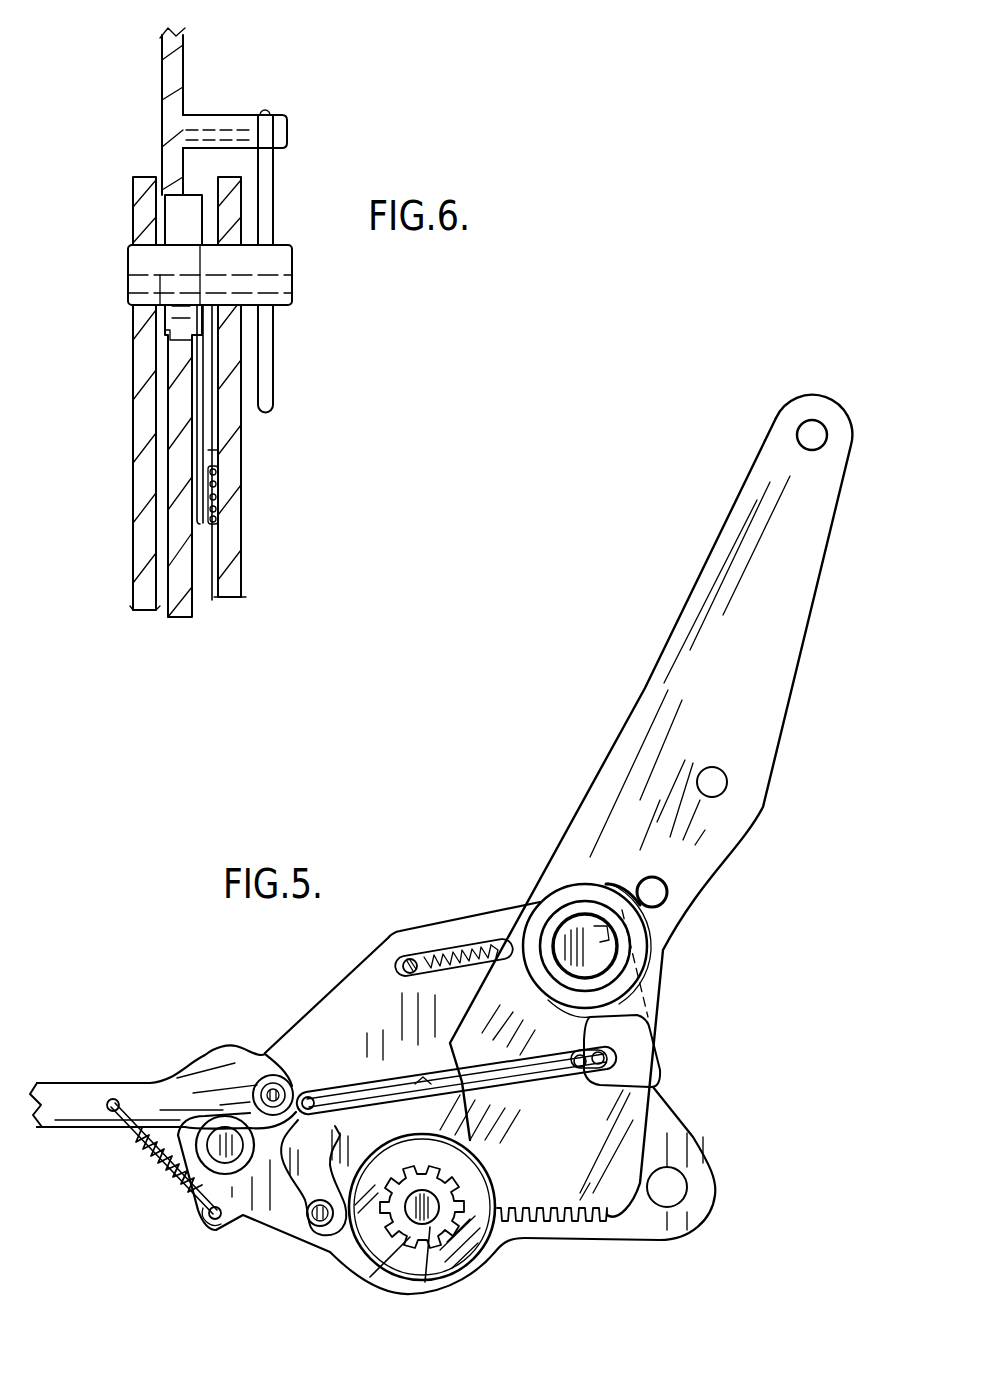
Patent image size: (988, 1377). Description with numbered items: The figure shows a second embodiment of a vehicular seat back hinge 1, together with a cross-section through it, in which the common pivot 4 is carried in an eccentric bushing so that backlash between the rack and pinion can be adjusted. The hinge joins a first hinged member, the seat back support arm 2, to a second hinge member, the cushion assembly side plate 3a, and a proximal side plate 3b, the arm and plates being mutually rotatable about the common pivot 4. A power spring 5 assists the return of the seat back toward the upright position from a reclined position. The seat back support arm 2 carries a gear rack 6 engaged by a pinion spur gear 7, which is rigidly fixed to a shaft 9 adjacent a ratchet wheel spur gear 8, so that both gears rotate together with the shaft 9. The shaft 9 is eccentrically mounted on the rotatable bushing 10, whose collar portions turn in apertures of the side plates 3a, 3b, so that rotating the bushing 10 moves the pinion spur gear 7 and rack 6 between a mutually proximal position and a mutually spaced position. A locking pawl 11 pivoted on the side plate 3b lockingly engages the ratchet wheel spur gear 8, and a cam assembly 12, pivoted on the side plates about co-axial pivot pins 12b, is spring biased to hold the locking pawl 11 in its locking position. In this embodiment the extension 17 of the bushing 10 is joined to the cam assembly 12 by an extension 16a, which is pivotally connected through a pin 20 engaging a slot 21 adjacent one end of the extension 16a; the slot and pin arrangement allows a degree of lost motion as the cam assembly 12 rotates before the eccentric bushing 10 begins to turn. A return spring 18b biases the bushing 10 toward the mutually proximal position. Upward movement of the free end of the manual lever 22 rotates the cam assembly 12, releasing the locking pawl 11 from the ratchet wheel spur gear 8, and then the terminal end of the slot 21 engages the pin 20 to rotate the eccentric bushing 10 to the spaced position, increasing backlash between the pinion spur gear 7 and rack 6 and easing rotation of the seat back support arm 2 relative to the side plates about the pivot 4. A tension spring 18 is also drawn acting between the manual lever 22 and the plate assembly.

In FIG. 5, the vehicular seat back hinge 1 is at (419, 849).
In FIG. 5, the seat back support arm 2 is at (743, 663).
In FIG. 6, the cushion assembly side plate 3a is at (133, 455).
In FIG. 5, the cushion assembly side plate 3a is at (397, 1024).
In FIG. 6, the proximal side plate 3b is at (243, 443).
In FIG. 5, the proximal side plate 3b is at (446, 1190).
In FIG. 6, the common pivot 4 is at (293, 277).
In FIG. 5, the common pivot 4 is at (593, 955).
In FIG. 6, the power spring 5 is at (273, 192).
In FIG. 5, the power spring 5 is at (578, 893).
In FIG. 5, the gear rack 6 is at (526, 1207).
In FIG. 5, the pinion spur gear 7 is at (430, 1227).
In FIG. 5, the ratchet wheel spur gear 8 is at (455, 1288).
In FIG. 5, the shaft 9 is at (410, 1237).
In FIG. 6, the eccentric bushing 10 is at (195, 322).
In FIG. 5, the eccentric bushing 10 is at (592, 1017).
In FIG. 5, the locking pawl 11 is at (332, 1186).
In FIG. 5, the cam assembly 12 is at (268, 1028).
In FIG. 5, the pivot pin 12b is at (293, 1077).
In FIG. 6, the extension 16a is at (213, 525).
In FIG. 5, the extension 16a is at (522, 1080).
In FIG. 6, the extension of bushing 17 is at (212, 455).
In FIG. 5, the extension of bushing 17 is at (620, 1055).
In FIG. 5, the tension spring 18 is at (150, 1173).
In FIG. 5, the return spring 18b is at (470, 950).
In FIG. 6, the pin 20 is at (216, 490).
In FIG. 5, the pin 20 is at (657, 1087).
In FIG. 6, the slot 21 is at (216, 520).
In FIG. 5, the slot 21 is at (625, 1072).
In FIG. 5, the manual lever 22 is at (63, 1127).